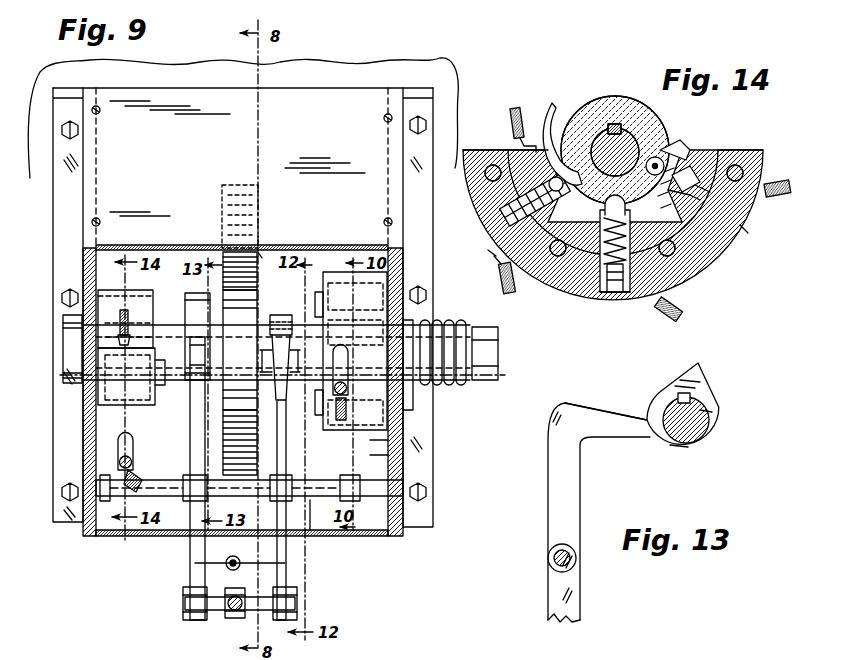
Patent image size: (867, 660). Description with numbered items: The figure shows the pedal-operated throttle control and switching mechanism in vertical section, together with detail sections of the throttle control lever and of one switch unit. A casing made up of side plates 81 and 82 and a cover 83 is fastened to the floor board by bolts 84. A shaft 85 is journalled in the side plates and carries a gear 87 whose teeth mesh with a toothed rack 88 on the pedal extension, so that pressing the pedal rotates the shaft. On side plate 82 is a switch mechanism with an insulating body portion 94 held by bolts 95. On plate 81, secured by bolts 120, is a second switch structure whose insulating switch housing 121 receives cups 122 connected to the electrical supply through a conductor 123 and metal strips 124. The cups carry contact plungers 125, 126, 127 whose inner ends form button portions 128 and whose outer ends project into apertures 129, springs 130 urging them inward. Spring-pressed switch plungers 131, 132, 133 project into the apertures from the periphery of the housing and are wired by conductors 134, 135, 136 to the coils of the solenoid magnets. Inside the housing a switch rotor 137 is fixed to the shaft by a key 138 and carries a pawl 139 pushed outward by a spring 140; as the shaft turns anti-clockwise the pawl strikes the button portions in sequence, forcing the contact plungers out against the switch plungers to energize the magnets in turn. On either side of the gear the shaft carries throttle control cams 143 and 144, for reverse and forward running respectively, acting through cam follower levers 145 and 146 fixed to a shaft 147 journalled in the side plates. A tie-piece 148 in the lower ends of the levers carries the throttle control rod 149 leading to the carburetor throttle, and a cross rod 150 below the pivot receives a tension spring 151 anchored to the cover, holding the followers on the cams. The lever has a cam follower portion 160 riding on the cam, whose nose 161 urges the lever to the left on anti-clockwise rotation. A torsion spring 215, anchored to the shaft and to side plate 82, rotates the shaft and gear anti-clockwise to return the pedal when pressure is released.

In FIG. 9, the side plate 81 is at (84, 265).
In FIG. 9, the side plate 82 is at (395, 270).
In FIG. 9, the cover 83 is at (278, 134).
In FIG. 9, the bolts 84 is at (80, 133).
In FIG. 9, the shaft 85 is at (318, 348).
In FIG. 14, the shaft 85 is at (632, 125).
In FIG. 13, the shaft 85 is at (710, 426).
In FIG. 9, the gear 87 is at (244, 338).
In FIG. 9, the toothed rack 88 is at (262, 258).
In FIG. 9, the body portion 94 is at (372, 438).
In FIG. 9, the bolts 95 is at (326, 295).
In FIG. 9, the bolts 120 is at (152, 460).
In FIG. 14, the bolts 120 is at (572, 264).
In FIG. 9, the switch housing 121 is at (105, 426).
In FIG. 14, the switch housing 121 is at (710, 263).
In FIG. 14, the cups 122 is at (485, 190).
In FIG. 14, the conductor 123 is at (521, 100).
In FIG. 14, the metal strips 124 is at (550, 142).
In FIG. 14, the contact plunger 125 is at (500, 214).
In FIG. 14, the contact plunger 126 is at (600, 280).
In FIG. 14, the contact plunger 127 is at (728, 152).
In FIG. 14, the button portions 128 is at (700, 160).
In FIG. 14, the apertures 129 is at (600, 304).
In FIG. 14, the springs 130 is at (764, 155).
In FIG. 14, the switch plunger 131 is at (487, 222).
In FIG. 14, the switch plunger 132 is at (614, 300).
In FIG. 14, the switch plunger 133 is at (748, 230).
In FIG. 14, the conductor 134 is at (502, 290).
In FIG. 14, the conductor 135 is at (668, 320).
In FIG. 14, the conductor 136 is at (790, 186).
In FIG. 9, the switch rotor 137 is at (102, 290).
In FIG. 14, the switch rotor 137 is at (606, 112).
In FIG. 14, the key 138 is at (614, 124).
In FIG. 14, the pawl 139 is at (670, 148).
In FIG. 14, the spring 140 is at (690, 150).
In FIG. 9, the throttle control cam 143 is at (198, 300).
In FIG. 13, the throttle control cam 143 is at (712, 450).
In FIG. 9, the throttle control cam 144 is at (282, 316).
In FIG. 9, the cam follower lever 145 is at (190, 415).
In FIG. 13, the cam follower lever 145 is at (560, 489).
In FIG. 9, the cam follower lever 146 is at (286, 428).
In FIG. 9, the shaft 147 is at (312, 505).
In FIG. 13, the shaft 147 is at (578, 558).
In FIG. 9, the tie-piece 148 is at (215, 622).
In FIG. 9, the throttle control rod 149 is at (236, 623).
In FIG. 9, the cross rod 150 is at (226, 560).
In FIG. 9, the tension spring 151 is at (240, 570).
In FIG. 13, the cam follower portion 160 is at (598, 420).
In FIG. 13, the nose 161 is at (688, 376).
In FIG. 9, the torsion spring 215 is at (445, 386).